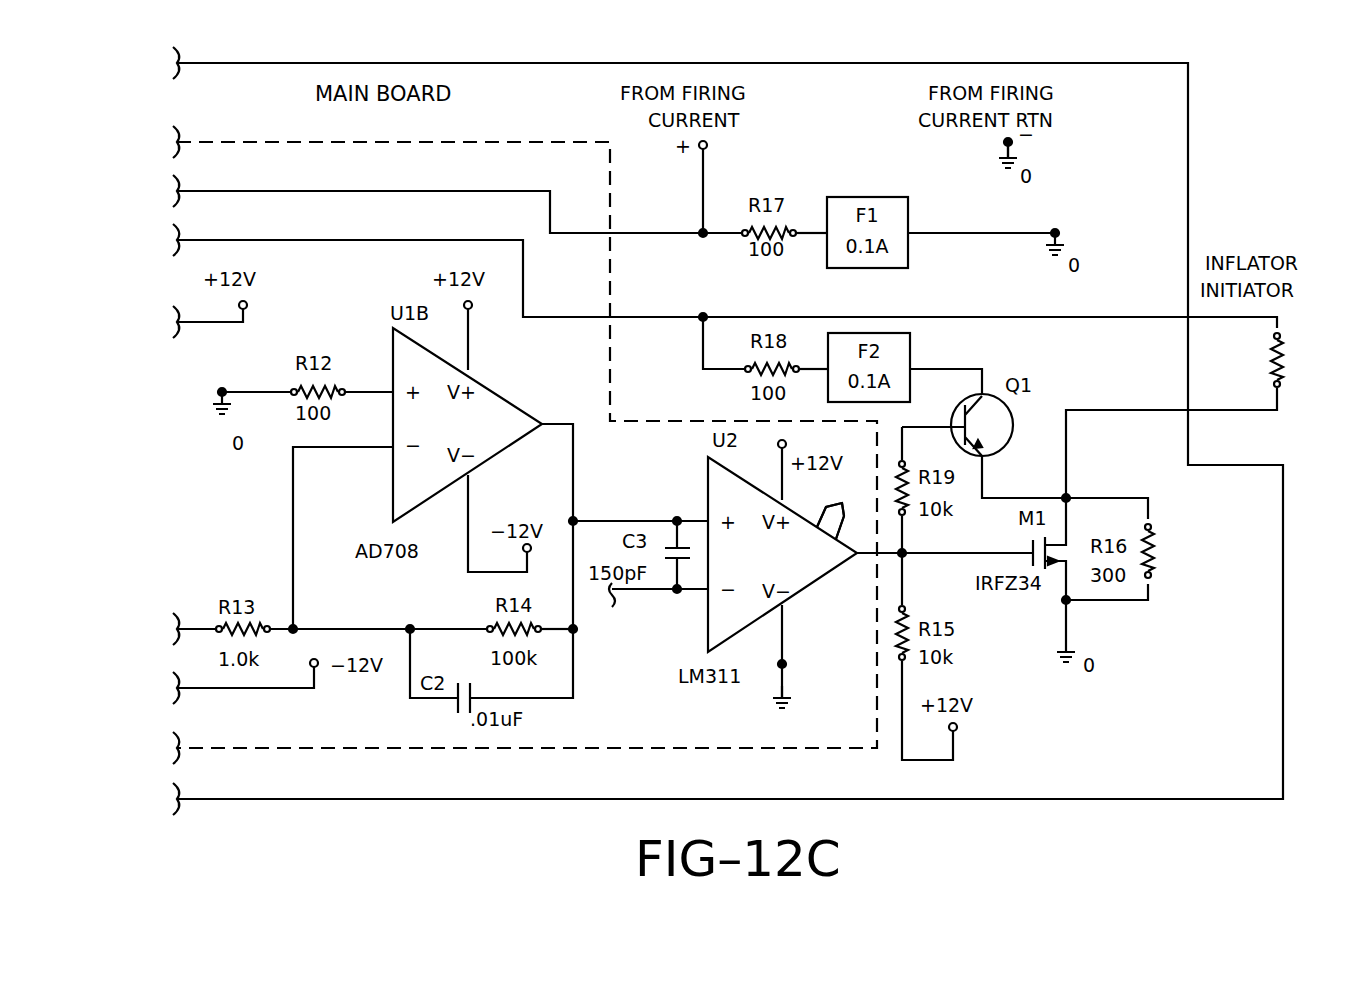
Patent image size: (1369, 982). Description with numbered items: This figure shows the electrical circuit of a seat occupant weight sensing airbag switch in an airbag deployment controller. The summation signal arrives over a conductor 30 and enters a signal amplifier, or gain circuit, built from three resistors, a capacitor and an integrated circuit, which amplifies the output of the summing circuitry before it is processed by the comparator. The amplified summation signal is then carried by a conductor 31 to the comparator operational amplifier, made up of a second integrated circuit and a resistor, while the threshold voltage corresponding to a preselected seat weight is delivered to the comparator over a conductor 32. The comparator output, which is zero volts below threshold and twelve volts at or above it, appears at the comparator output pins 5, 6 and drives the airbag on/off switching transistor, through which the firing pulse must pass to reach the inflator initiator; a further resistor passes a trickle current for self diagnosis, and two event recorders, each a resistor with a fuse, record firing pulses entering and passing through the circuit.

The conductor 30 is at (190, 629).
The conductor 31 is at (629, 521).
The conductor 32 is at (630, 589).
The comparator output pin 5 is at (823, 513).
The comparator output pin 6 is at (850, 523).